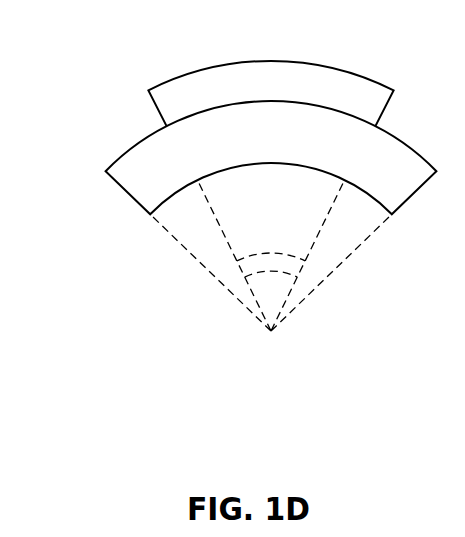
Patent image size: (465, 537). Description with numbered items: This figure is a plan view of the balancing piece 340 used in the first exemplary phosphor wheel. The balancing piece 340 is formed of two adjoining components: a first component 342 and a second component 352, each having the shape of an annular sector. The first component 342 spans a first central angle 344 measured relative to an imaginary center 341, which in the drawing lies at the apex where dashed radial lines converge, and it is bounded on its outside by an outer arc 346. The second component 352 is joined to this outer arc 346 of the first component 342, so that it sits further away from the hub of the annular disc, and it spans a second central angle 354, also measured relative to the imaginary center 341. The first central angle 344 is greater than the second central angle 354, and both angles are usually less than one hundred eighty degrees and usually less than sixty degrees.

The balancing piece 340 is at (75, 54).
The imaginary center 341 is at (271, 272).
The first component 342 is at (297, 146).
The first central angle 344 is at (233, 291).
The outer arc 346 is at (117, 163).
The second component 352 is at (290, 96).
The second central angle 354 is at (293, 253).